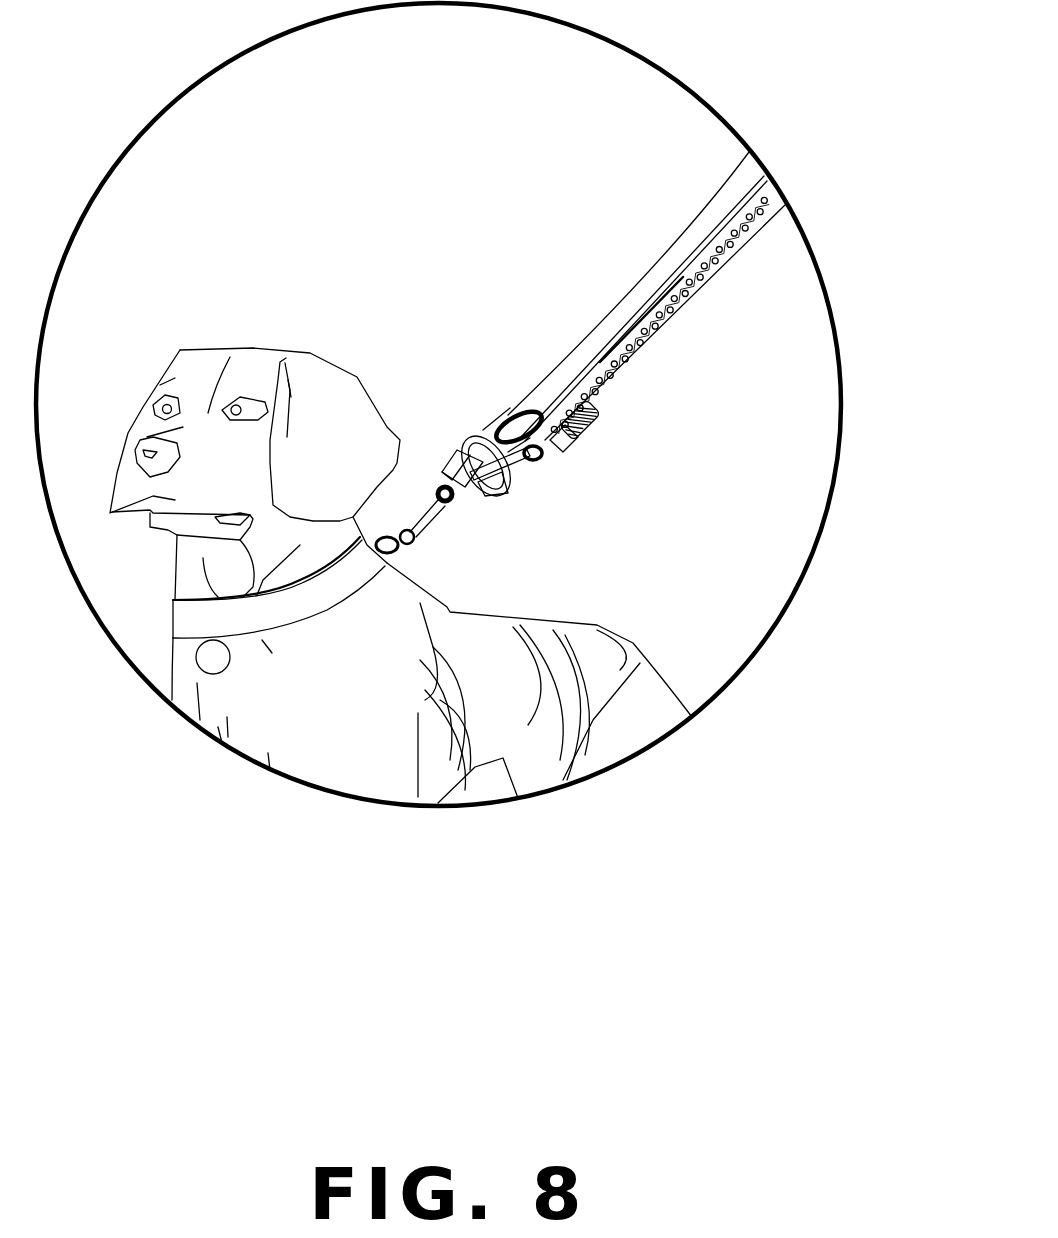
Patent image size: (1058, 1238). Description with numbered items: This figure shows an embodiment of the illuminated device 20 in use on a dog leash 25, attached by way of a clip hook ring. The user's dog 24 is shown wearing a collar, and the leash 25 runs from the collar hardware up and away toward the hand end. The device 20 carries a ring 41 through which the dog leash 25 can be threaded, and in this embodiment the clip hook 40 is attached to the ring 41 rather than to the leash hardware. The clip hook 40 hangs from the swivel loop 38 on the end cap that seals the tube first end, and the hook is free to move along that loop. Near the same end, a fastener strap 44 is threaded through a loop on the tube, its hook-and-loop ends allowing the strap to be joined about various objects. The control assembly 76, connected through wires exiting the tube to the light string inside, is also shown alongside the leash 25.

The device 20 is at (767, 252).
The dog 24 is at (256, 348).
The leash 25 is at (722, 192).
The swivel loop 38 is at (500, 425).
The clip hook 40 is at (488, 497).
The ring 41 is at (537, 460).
The fastener strap 44 is at (524, 406).
The control assembly 76 is at (590, 430).